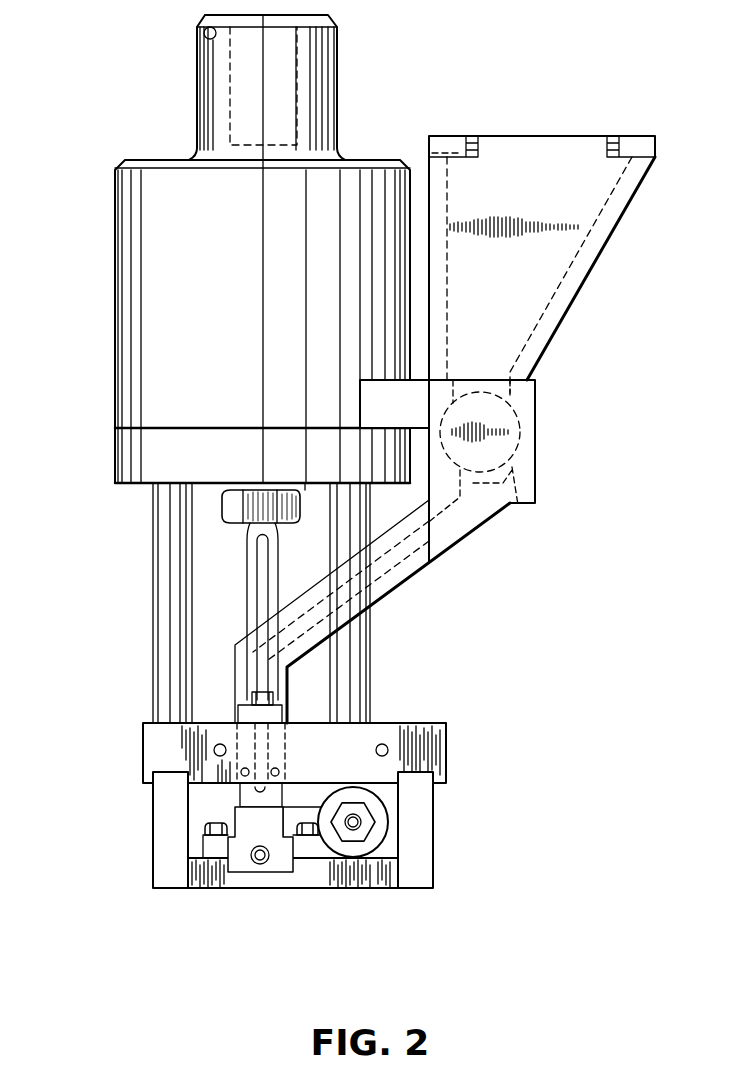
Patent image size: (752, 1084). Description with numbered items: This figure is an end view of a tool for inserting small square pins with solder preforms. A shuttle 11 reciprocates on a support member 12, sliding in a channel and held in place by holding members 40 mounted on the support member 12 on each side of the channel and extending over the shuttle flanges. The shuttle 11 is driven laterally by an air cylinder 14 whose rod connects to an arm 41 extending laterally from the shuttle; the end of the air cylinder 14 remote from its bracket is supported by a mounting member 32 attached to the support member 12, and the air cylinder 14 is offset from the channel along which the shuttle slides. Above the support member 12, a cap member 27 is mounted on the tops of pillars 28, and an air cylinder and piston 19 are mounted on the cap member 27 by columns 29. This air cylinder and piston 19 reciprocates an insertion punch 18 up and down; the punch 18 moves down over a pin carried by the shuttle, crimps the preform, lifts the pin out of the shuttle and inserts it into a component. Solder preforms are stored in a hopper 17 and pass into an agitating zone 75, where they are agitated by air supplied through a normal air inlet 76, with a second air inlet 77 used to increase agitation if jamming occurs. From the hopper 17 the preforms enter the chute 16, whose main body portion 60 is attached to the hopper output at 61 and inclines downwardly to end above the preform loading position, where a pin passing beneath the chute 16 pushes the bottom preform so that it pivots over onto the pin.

The shuttle 11 is at (250, 845).
The support member 12 is at (388, 880).
The air cylinder 14 is at (385, 828).
The chute 16 is at (308, 636).
The hopper 17 is at (557, 258).
The insertion punch 18 is at (250, 582).
The air cylinder and piston 19 is at (100, 356).
The cap member 27 is at (437, 735).
The pillars 28 is at (158, 798).
The columns 29 is at (160, 640).
The mounting member 32 is at (380, 858).
The holding members 40 is at (210, 850).
The arm 41 is at (290, 822).
The main body portion 60 is at (415, 563).
The attachment point of chute body portion to hopper output 61 is at (443, 537).
The agitating zone 75 is at (505, 415).
The air inlet 76 is at (523, 427).
The second air inlet 77 is at (518, 507).